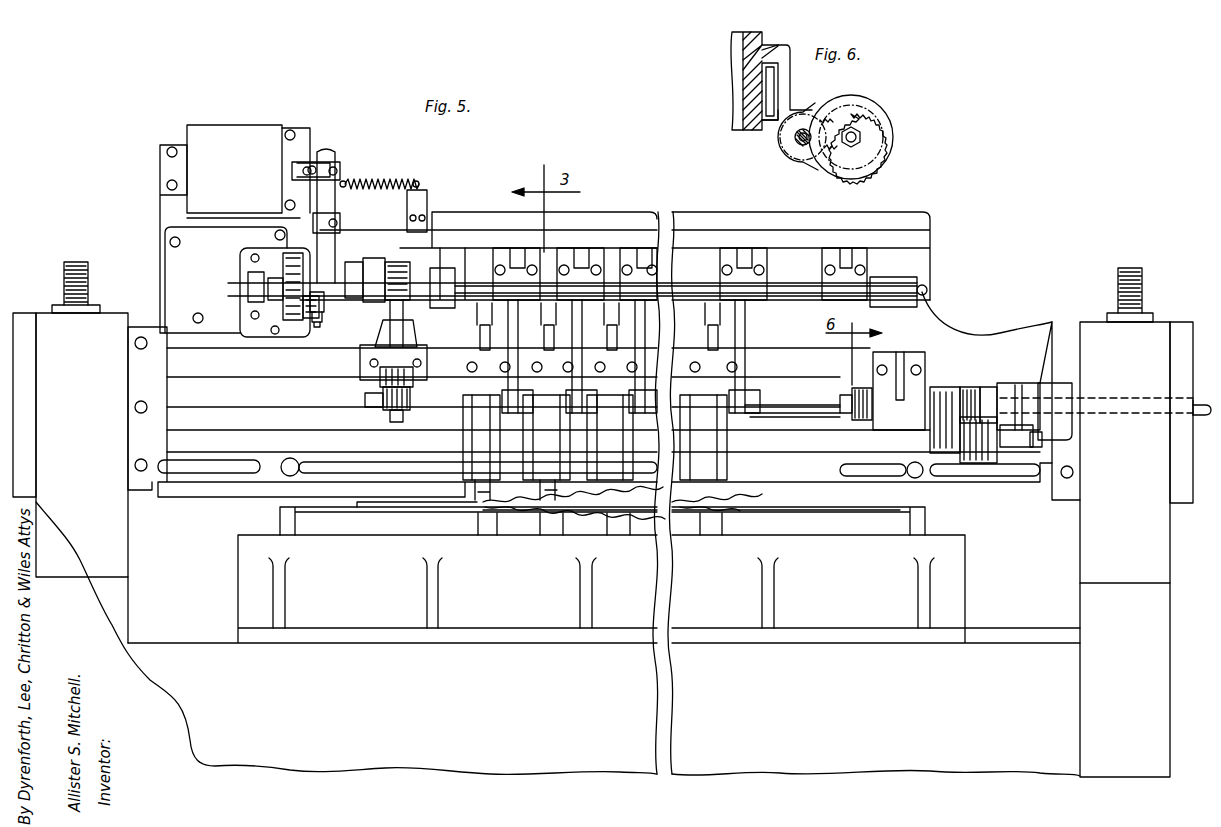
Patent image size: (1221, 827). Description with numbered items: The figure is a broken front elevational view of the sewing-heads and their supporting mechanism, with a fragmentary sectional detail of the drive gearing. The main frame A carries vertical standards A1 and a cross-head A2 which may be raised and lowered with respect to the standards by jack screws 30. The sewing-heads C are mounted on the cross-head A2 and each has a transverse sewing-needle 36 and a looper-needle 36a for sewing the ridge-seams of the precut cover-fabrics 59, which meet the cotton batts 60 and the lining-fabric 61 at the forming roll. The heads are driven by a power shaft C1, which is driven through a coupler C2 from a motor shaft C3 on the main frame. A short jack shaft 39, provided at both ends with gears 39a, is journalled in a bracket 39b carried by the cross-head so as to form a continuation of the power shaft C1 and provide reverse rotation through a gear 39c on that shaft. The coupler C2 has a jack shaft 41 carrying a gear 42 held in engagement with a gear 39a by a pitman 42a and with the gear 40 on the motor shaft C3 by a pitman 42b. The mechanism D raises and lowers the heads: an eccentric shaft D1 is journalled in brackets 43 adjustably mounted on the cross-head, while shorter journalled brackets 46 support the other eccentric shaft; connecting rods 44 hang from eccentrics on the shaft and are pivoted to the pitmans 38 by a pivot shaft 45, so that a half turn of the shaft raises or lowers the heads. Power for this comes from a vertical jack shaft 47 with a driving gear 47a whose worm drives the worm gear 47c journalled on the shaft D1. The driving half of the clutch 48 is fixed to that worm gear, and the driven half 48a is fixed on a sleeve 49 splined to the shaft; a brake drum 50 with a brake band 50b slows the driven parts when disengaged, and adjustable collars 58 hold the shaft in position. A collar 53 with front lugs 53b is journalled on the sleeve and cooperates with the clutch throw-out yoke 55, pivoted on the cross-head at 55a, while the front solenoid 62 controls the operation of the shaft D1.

In FIG. 5, the jack screws 30 is at (76, 260).
In FIG. 5, the vertical standards A1 is at (102, 322).
In FIG. 5, the main frame A is at (538, 745).
In FIG. 5, the cross-head A2 is at (960, 332).
In FIG. 6, the cross-head A2 is at (742, 60).
In FIG. 5, the front solenoid 62 is at (235, 135).
In FIG. 5, the raising and lowering mechanism D is at (337, 184).
In FIG. 5, the eccentric shaft D1 is at (925, 285).
In FIG. 5, the clutch throw-out yoke 55 is at (345, 178).
In FIG. 5, the yoke pivot 55a is at (340, 222).
In FIG. 5, the collar 53 is at (362, 269).
In FIG. 5, the front lugs 53b is at (390, 304).
In FIG. 5, the brake drum 50 is at (290, 278).
In FIG. 5, the brake band 50b is at (290, 320).
In FIG. 5, the adjustable collars 58 is at (248, 288).
In FIG. 5, the sleeve 49 is at (318, 324).
In FIG. 5, the vertical jack shaft 47 is at (397, 347).
In FIG. 5, the driving gear 47a is at (367, 397).
In FIG. 5, the worm gear 47c is at (430, 258).
In FIG. 5, the driving half of the clutch 48 is at (360, 260).
In FIG. 5, the driven half of the clutch 48a is at (350, 262).
In FIG. 5, the journalled brackets 46 is at (578, 262).
In FIG. 5, the connecting rods 44 is at (645, 325).
In FIG. 5, the brackets 43 is at (760, 310).
In FIG. 5, the pitmans 38 is at (465, 413).
In FIG. 5, the pivot shaft 45 is at (753, 408).
In FIG. 5, the jack shaft 39 is at (845, 400).
In FIG. 6, the jack shaft 39 is at (862, 137).
In FIG. 5, the gears 39a is at (968, 386).
In FIG. 5, the bracket 39b is at (900, 372).
In FIG. 6, the bracket 39b is at (882, 154).
In FIG. 6, the gear 39c is at (803, 147).
In FIG. 5, the gear 40 is at (993, 385).
In FIG. 5, the coupler jack shaft 41 is at (1042, 443).
In FIG. 5, the coupler gear 42 is at (978, 465).
In FIG. 5, the pitman 42a is at (940, 440).
In FIG. 5, the pitman 42b is at (1020, 423).
In FIG. 5, the transverse sewing-needle 36 is at (745, 503).
In FIG. 5, the looper-needle 36a is at (700, 522).
In FIG. 5, the precut cover-fabrics 59 is at (532, 508).
In FIG. 5, the cotton batts 60 is at (528, 505).
In FIG. 5, the lining-fabric 61 is at (410, 512).
In FIG. 5, the sewing-heads C is at (607, 508).
In FIG. 5, the power shaft C1 is at (800, 413).
In FIG. 6, the power shaft C1 is at (797, 143).
In FIG. 5, the coupler C2 is at (1018, 452).
In FIG. 5, the motor shaft C3 is at (1200, 413).